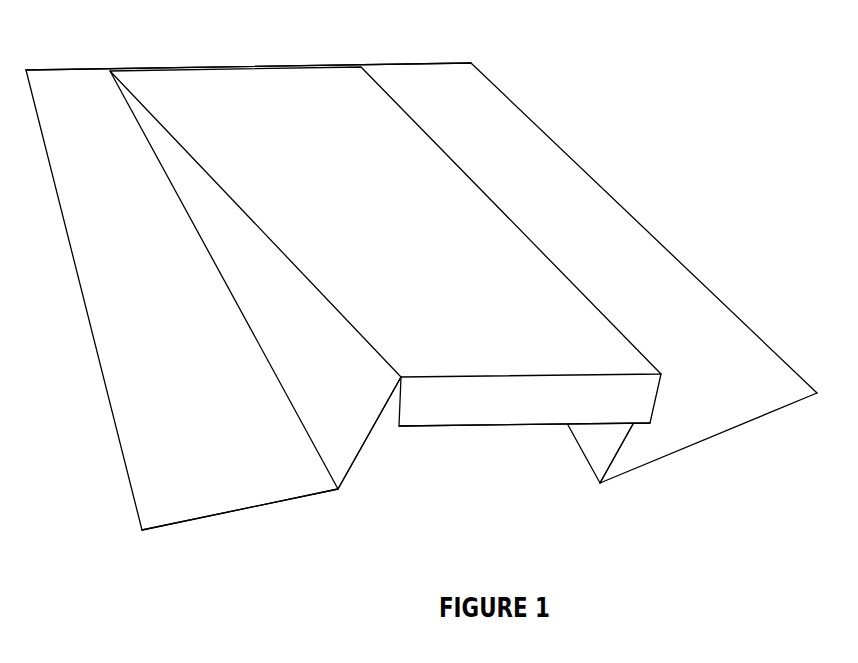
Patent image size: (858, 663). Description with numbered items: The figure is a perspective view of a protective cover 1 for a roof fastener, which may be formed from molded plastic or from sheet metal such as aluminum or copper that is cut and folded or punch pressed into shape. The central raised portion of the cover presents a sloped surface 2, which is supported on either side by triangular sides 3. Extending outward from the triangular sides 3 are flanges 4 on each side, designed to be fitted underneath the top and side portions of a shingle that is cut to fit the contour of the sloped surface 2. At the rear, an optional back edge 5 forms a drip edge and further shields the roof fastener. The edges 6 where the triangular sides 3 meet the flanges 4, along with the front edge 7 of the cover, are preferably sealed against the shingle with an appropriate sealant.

The protective cover 1 is at (610, 62).
The sloped surface 2 is at (316, 113).
The triangular sides 3 is at (353, 425).
The flanges 4 is at (260, 490).
The back edge 5 is at (484, 413).
The edges 6 is at (315, 455).
The front edge 7 is at (215, 68).